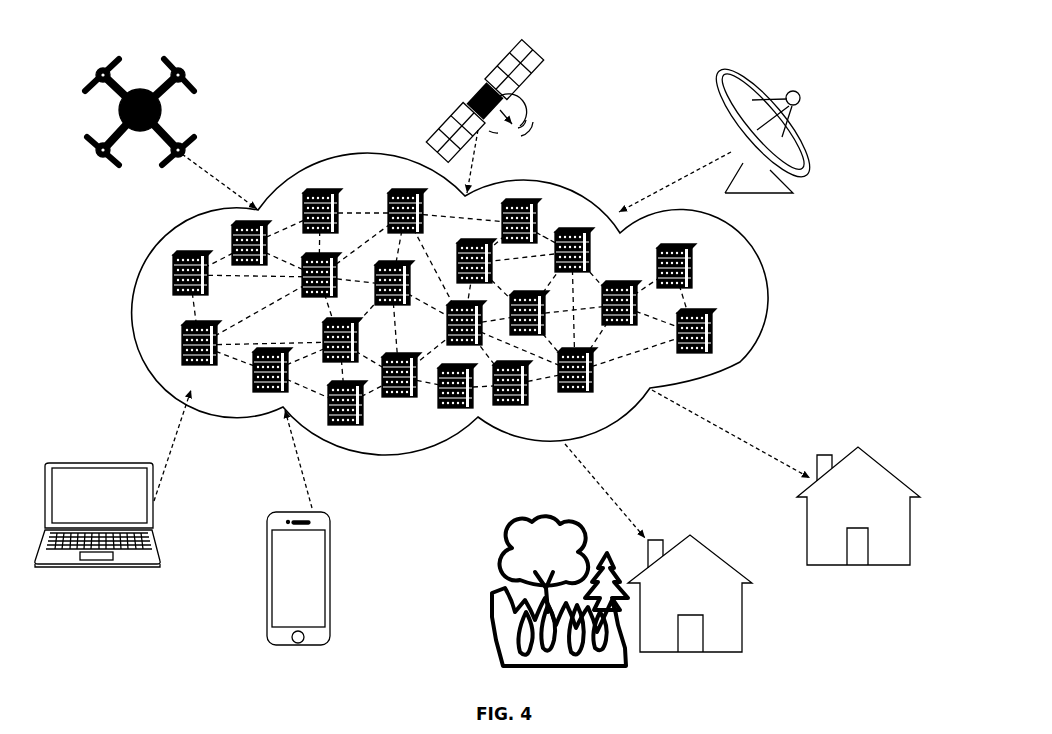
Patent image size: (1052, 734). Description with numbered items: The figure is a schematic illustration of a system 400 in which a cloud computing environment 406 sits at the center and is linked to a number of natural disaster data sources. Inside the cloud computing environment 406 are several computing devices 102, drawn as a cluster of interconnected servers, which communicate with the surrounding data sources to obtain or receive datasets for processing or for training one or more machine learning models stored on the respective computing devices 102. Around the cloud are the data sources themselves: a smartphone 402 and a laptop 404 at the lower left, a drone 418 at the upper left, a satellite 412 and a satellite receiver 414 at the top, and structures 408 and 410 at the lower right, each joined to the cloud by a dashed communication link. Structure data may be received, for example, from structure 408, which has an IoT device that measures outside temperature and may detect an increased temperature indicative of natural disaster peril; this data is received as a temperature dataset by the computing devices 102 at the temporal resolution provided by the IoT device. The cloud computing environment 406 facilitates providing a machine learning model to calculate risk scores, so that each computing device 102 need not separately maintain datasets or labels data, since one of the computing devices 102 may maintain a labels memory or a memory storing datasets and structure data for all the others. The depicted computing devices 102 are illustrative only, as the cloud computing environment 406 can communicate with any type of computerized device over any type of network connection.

The system 400 is at (902, 44).
The drone 418 is at (121, 104).
The satellite 412 is at (477, 86).
The satellite receiver 414 is at (778, 193).
The cloud computing environment 406 is at (765, 310).
The computing devices 102 is at (740, 362).
The laptop 404 is at (153, 515).
The smartphone 402 is at (277, 512).
The structure 408 is at (655, 540).
The structure 410 is at (825, 455).